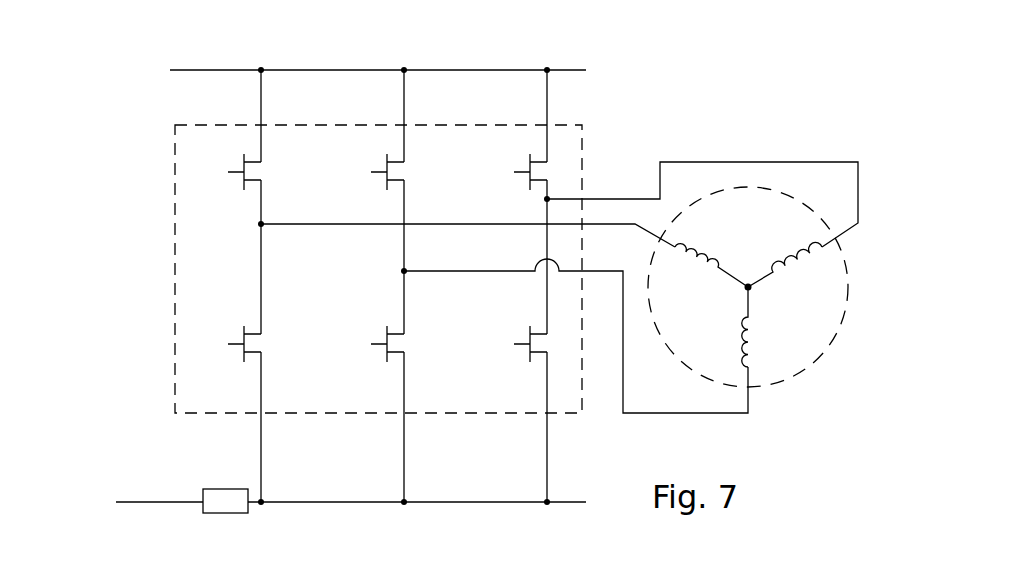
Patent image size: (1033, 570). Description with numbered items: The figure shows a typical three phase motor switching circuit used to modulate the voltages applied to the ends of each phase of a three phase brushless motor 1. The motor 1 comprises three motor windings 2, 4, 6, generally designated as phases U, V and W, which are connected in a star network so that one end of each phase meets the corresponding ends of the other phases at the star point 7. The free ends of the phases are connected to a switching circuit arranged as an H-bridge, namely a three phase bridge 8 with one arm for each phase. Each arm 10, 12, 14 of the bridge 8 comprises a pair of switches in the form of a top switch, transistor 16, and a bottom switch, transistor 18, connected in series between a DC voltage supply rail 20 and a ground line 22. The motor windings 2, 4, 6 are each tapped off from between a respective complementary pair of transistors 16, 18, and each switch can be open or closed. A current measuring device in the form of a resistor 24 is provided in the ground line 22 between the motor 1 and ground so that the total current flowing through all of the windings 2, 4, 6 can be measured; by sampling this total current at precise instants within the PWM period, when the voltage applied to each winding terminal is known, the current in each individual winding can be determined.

The three phase brushless motor 1 is at (850, 256).
The motor winding 2 is at (707, 253).
The motor winding 4 is at (743, 333).
The motor winding 6 is at (792, 268).
The star point 7 is at (748, 287).
The three phase bridge 8 is at (175, 199).
The arm 10 is at (262, 113).
The arm 12 is at (404, 108).
The arm 14 is at (547, 108).
The top switch transistor 16 is at (262, 206).
The bottom switch transistor 18 is at (262, 385).
The DC voltage supply rail 20 is at (208, 70).
The ground line 22 is at (175, 507).
The resistor 24 is at (230, 515).